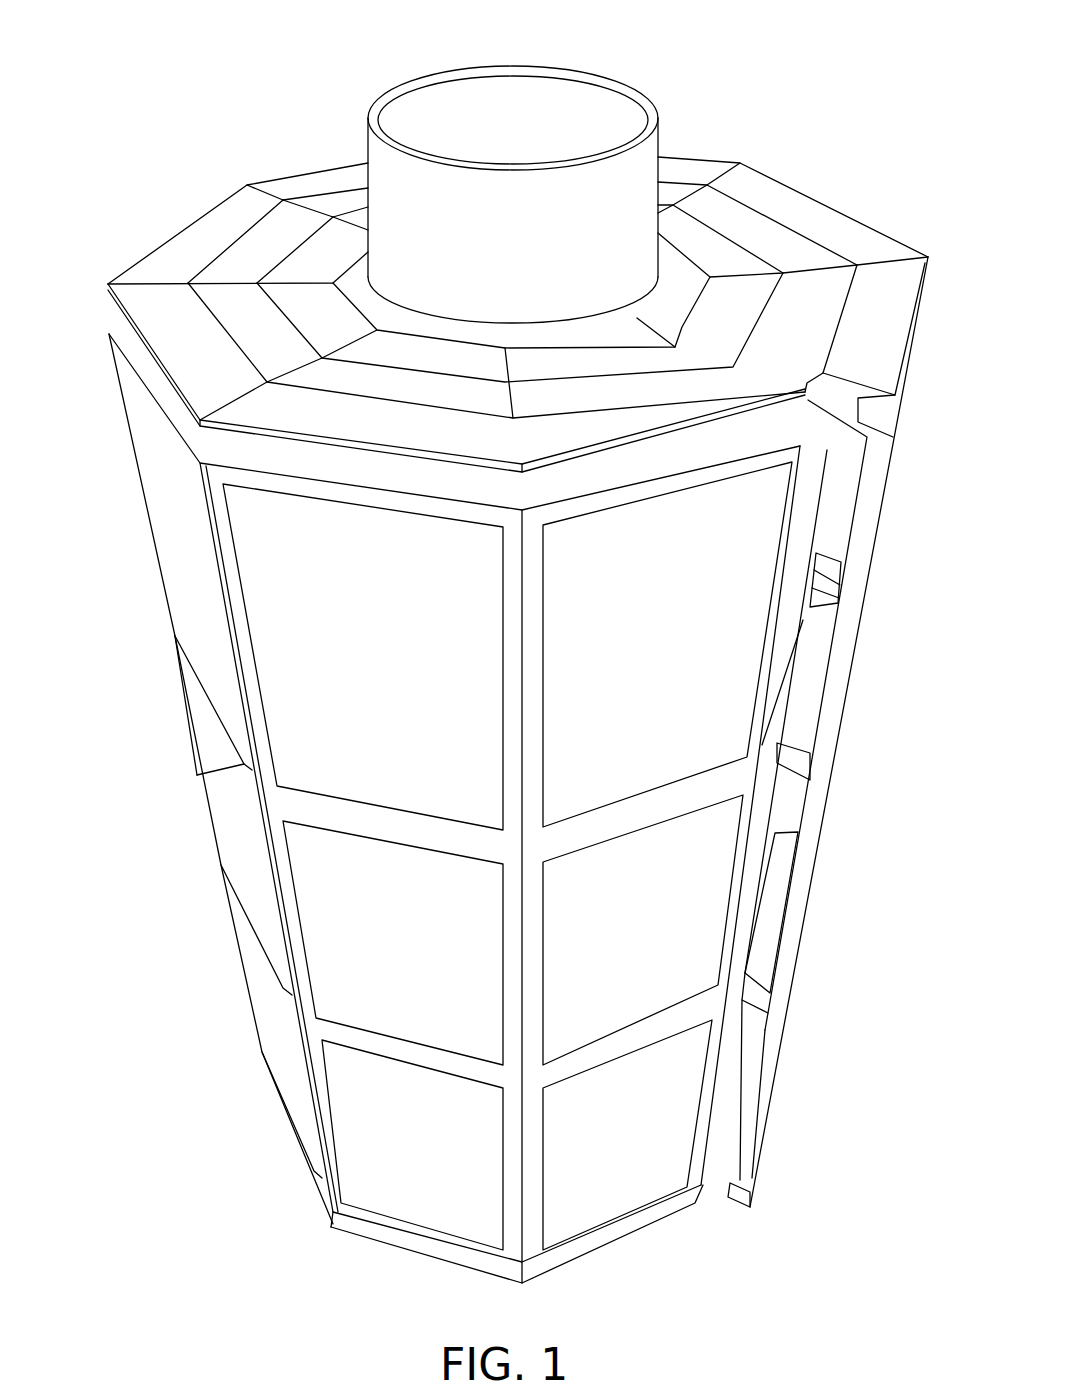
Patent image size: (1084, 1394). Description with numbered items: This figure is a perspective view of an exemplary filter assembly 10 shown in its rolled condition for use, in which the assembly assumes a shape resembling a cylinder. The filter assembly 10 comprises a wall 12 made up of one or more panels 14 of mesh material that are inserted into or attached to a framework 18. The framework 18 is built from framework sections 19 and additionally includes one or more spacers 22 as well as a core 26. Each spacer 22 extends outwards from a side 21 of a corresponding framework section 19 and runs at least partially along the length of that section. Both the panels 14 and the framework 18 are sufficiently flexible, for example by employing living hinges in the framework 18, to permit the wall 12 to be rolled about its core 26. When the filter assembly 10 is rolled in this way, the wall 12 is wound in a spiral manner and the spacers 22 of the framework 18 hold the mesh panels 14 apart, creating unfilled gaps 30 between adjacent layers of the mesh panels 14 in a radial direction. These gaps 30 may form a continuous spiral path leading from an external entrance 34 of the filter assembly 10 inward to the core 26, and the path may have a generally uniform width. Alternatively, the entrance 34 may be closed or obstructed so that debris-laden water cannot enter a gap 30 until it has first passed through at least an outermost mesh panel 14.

The filter assembly 10 is at (745, 137).
The wall 12 is at (148, 561).
The panel 14 is at (384, 712).
The framework 18 is at (185, 678).
The framework section 19 is at (220, 760).
The side 21 is at (797, 870).
The spacer 22 is at (835, 570).
The core 26 is at (597, 72).
The gap 30 is at (845, 490).
The external entrance 34 is at (840, 743).